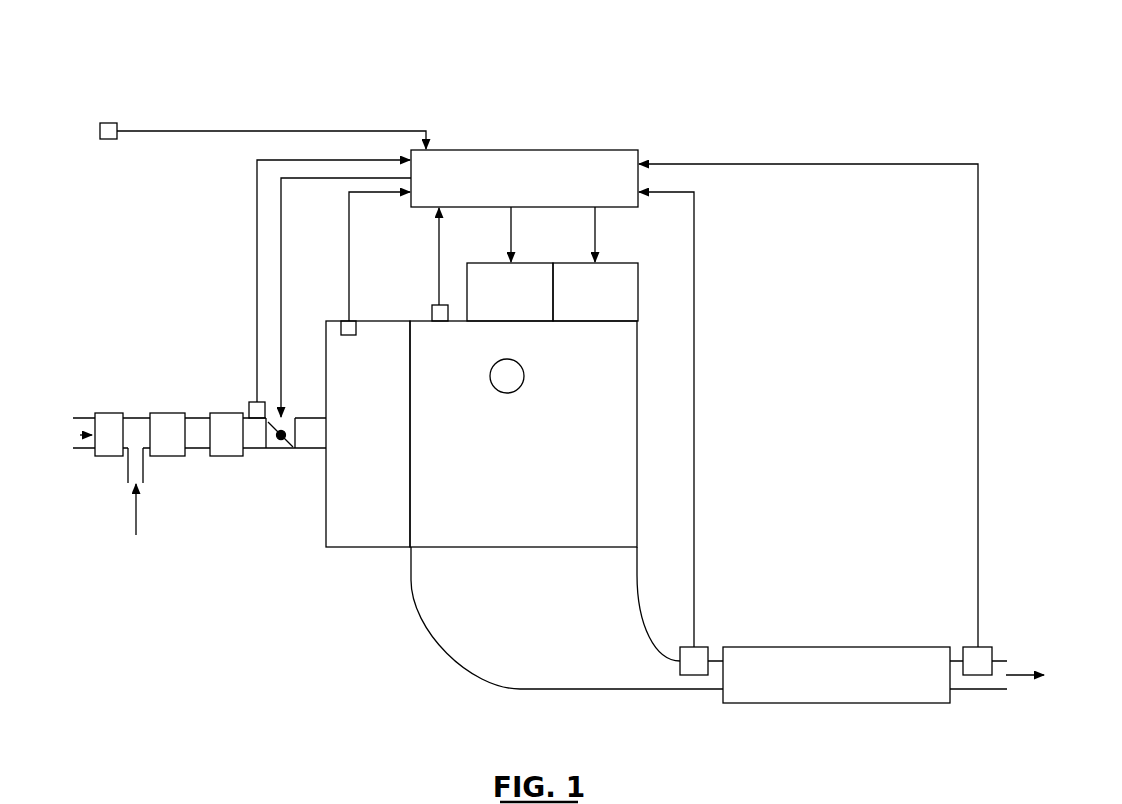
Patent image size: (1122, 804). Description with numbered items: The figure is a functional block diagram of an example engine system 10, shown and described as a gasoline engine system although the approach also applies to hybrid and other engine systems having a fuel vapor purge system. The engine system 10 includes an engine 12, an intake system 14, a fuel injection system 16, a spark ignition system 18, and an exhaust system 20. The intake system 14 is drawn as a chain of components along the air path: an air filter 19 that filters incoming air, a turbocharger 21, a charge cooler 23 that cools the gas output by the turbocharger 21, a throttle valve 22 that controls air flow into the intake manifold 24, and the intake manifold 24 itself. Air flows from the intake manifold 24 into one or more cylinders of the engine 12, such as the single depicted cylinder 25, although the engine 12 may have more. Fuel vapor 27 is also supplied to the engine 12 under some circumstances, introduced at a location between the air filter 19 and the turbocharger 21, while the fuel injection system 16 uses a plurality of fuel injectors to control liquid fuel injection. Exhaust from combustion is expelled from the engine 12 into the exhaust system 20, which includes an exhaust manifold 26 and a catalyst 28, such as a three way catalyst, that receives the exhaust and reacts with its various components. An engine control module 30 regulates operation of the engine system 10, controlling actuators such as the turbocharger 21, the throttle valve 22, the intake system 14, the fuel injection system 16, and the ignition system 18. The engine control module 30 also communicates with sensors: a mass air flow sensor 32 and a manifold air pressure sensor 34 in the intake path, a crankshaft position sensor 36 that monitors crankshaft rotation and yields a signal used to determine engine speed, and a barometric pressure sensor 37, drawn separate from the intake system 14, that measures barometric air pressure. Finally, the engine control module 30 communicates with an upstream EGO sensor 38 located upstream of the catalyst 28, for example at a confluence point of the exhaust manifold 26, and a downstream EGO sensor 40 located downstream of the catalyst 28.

The engine system 10 is at (111, 73).
The engine 12 is at (537, 409).
The intake system 14 is at (189, 226).
The fuel injection system 16 is at (476, 263).
The ignition system 18 is at (632, 263).
The air filter 19 is at (105, 413).
The exhaust system 20 is at (600, 719).
The turbocharger 21 is at (168, 413).
The throttle valve 22 is at (287, 418).
The charge cooler 23 is at (222, 413).
The intake manifold 24 is at (347, 369).
The cylinder 25 is at (524, 373).
The exhaust manifold 26 is at (411, 562).
The fuel vapor 27 is at (136, 510).
The catalyst 28 is at (836, 647).
The engine control module 30 is at (522, 150).
The mass air flow sensor 32 is at (255, 402).
The manifold air pressure sensor 34 is at (356, 335).
The crankshaft position sensor 36 is at (436, 305).
The barometric pressure sensor 37 is at (108, 139).
The upstream EGO sensor 38 is at (690, 647).
The downstream EGO sensor 40 is at (966, 647).